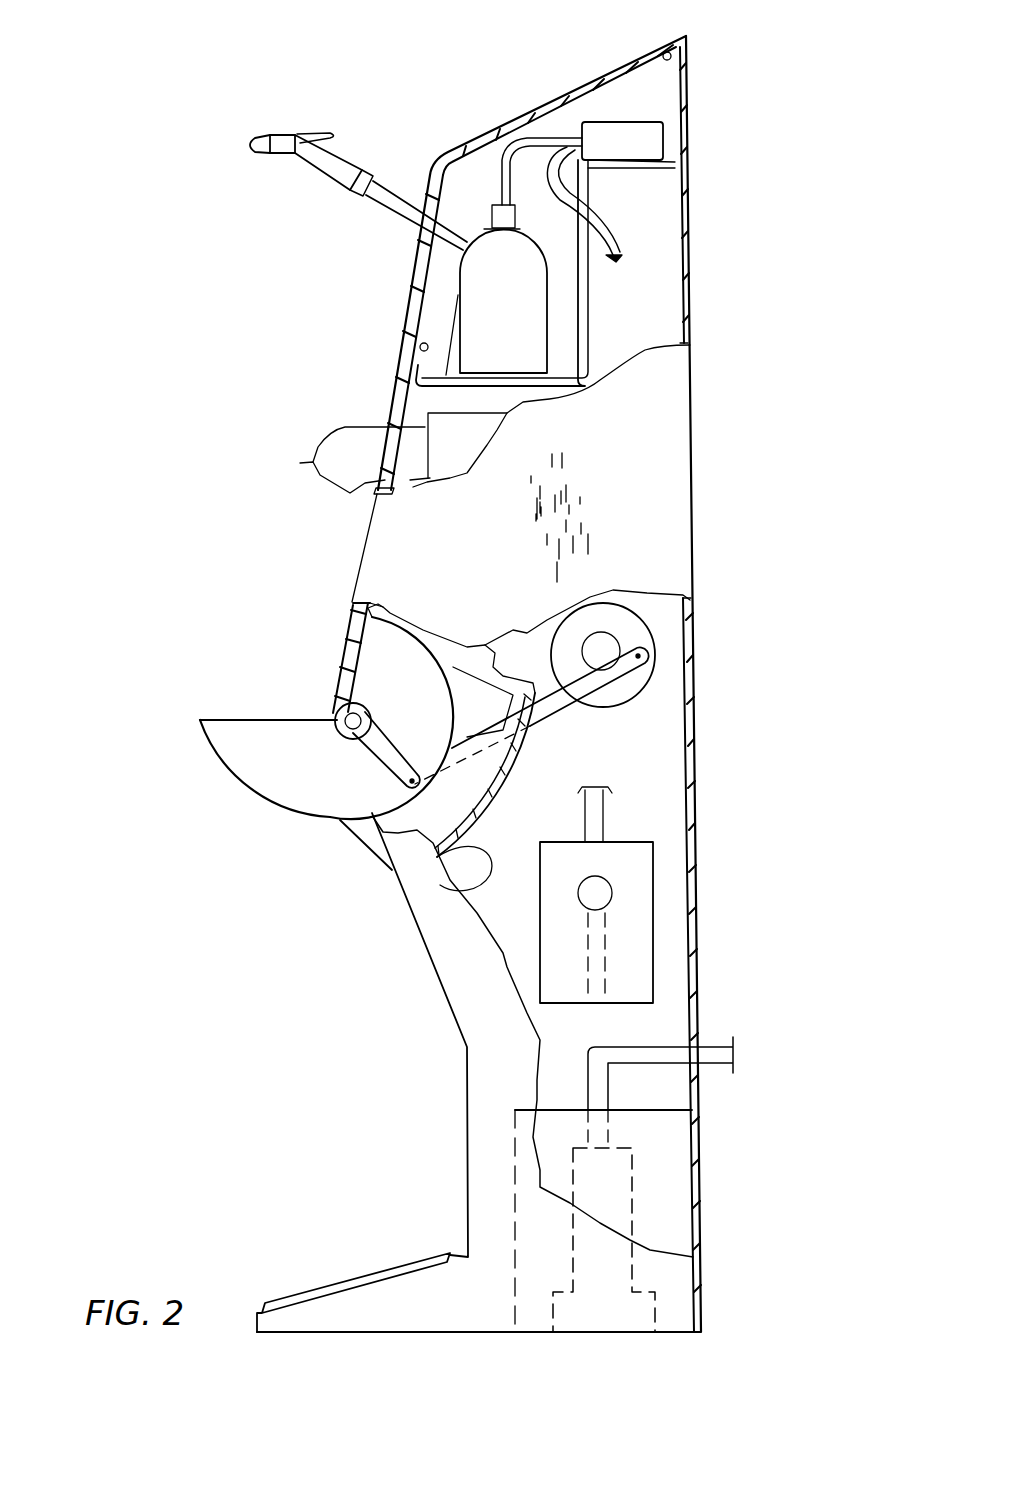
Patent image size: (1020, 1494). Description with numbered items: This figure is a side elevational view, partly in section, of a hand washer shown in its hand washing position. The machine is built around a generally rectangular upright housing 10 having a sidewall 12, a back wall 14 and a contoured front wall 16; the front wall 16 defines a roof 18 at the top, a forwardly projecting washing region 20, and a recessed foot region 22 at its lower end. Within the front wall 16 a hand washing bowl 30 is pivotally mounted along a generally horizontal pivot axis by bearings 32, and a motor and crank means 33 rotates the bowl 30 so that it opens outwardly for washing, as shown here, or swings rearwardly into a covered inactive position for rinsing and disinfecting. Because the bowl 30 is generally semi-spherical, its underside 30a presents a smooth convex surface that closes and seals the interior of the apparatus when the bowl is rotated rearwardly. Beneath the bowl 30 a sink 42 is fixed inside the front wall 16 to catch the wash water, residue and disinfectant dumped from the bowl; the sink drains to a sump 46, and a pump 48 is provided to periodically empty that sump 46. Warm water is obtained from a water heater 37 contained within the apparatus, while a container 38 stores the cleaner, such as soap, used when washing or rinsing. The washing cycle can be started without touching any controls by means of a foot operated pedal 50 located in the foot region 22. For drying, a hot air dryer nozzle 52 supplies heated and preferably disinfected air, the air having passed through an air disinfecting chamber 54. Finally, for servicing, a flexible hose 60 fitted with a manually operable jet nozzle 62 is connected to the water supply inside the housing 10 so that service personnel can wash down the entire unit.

The housing 10 is at (322, 334).
The sidewall 12 is at (630, 316).
The back wall 14 is at (693, 522).
The front wall 16 is at (392, 368).
The roof 18 is at (518, 115).
The washing region 20 is at (340, 638).
The foot region 22 is at (483, 1187).
The hand washing bowl 30 is at (233, 788).
The underside of the bowl 30a is at (350, 738).
The bearings 32 is at (345, 745).
The motor and crank means 33 is at (640, 623).
The water heater 37 is at (640, 947).
The container 38 is at (540, 312).
The sink 42 is at (460, 885).
The sump 46 is at (550, 1135).
The pump 48 is at (618, 1268).
The foot operated pedal 50 is at (347, 1280).
The hot air dryer nozzle 52 is at (333, 463).
The air disinfecting chamber 54 is at (473, 445).
The flexible hose 60 is at (395, 210).
The jet nozzle 62 is at (312, 160).